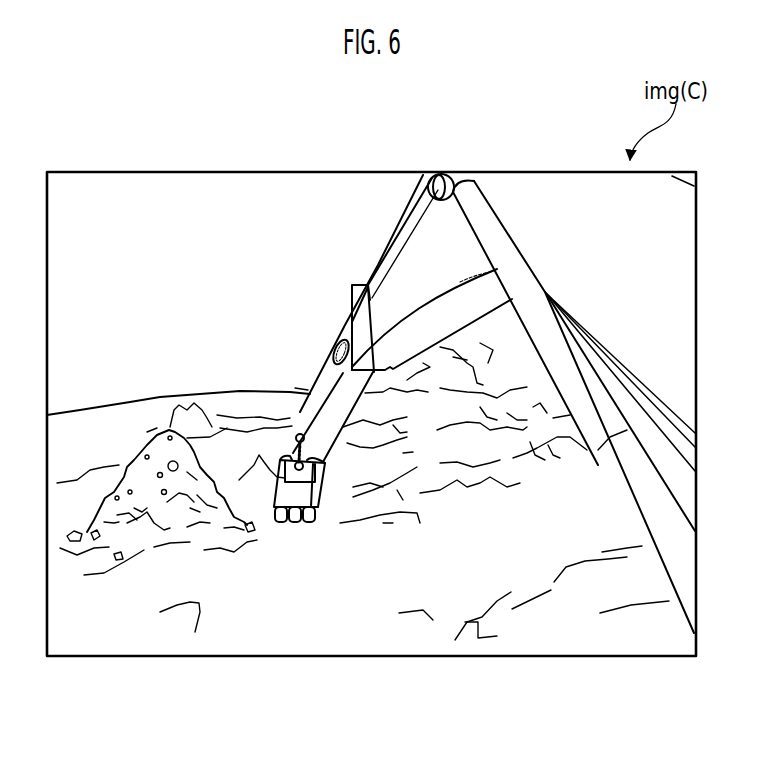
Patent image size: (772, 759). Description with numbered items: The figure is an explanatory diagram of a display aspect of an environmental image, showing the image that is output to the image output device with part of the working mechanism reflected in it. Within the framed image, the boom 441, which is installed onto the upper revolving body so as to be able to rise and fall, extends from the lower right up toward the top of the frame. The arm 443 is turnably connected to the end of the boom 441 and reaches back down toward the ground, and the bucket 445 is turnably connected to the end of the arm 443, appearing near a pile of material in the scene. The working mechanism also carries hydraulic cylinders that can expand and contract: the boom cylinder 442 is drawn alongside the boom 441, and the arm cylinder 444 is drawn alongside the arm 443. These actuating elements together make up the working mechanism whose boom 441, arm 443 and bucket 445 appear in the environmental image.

The boom 441 is at (437, 343).
The boom cylinder 442 is at (592, 463).
The arm 443 is at (321, 343).
The arm cylinder 444 is at (388, 231).
The bucket 445 is at (264, 491).